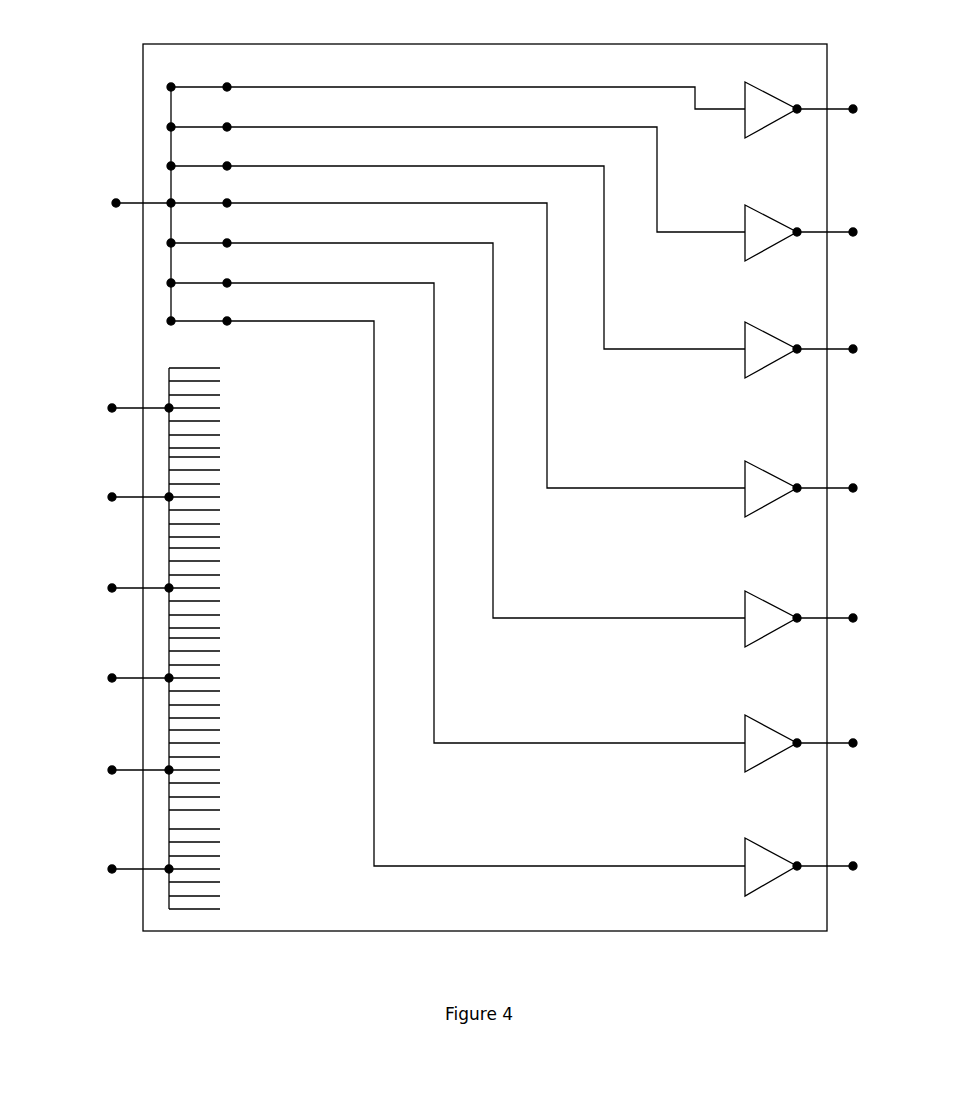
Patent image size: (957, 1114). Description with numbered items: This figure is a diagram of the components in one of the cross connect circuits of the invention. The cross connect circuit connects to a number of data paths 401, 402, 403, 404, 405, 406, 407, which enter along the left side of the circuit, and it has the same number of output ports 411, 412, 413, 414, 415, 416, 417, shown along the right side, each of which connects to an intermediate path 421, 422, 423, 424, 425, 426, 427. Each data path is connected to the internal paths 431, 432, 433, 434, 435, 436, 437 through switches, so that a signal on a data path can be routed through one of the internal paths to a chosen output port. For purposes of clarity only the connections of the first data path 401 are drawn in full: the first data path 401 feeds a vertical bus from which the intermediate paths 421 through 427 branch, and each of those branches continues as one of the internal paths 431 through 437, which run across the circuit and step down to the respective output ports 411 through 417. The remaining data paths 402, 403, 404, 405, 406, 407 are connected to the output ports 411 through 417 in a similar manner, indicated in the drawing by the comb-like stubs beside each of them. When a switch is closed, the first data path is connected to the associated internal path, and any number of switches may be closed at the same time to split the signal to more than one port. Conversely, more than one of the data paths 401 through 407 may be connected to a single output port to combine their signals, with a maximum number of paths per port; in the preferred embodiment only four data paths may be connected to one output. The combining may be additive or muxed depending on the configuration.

The data path 401 is at (110, 205).
The data path 402 is at (108, 409).
The data path 403 is at (108, 498).
The data path 404 is at (108, 589).
The data path 405 is at (108, 679).
The data path 406 is at (108, 771).
The data path 407 is at (108, 870).
The output port 411 is at (770, 93).
The output port 412 is at (770, 216).
The output port 413 is at (770, 333).
The output port 414 is at (770, 472).
The output port 415 is at (770, 602).
The output port 416 is at (770, 727).
The output port 417 is at (770, 850).
The intermediate path 421 is at (198, 86).
The intermediate path 422 is at (198, 126).
The intermediate path 423 is at (198, 165).
The intermediate path 424 is at (198, 202).
The intermediate path 425 is at (198, 242).
The intermediate path 426 is at (198, 282).
The intermediate path 427 is at (198, 320).
The internal path 431 is at (342, 86).
The internal path 432 is at (342, 126).
The internal path 433 is at (342, 165).
The internal path 434 is at (342, 202).
The internal path 435 is at (342, 242).
The internal path 436 is at (342, 282).
The internal path 437 is at (342, 320).